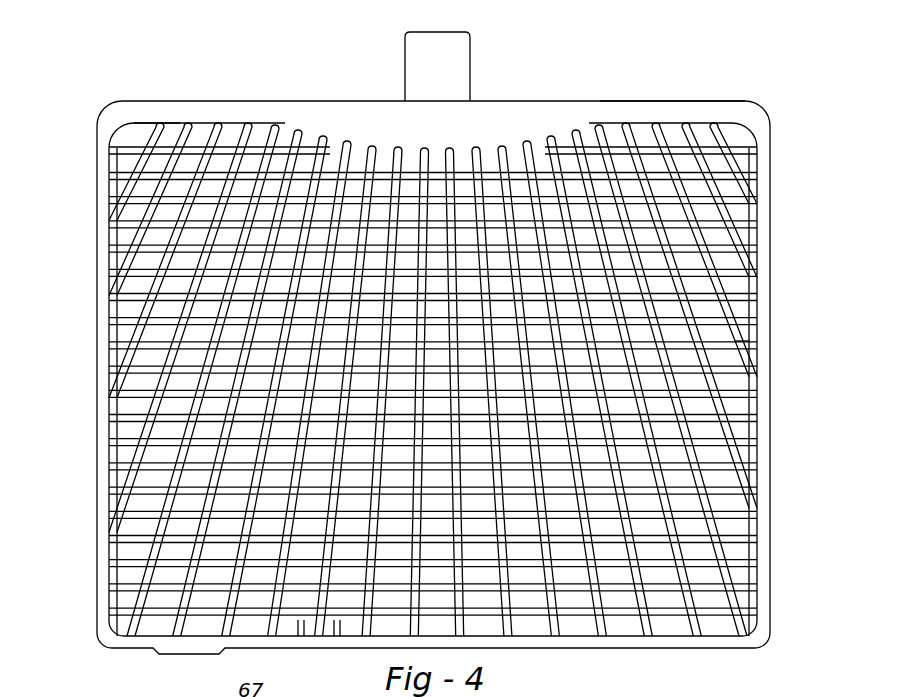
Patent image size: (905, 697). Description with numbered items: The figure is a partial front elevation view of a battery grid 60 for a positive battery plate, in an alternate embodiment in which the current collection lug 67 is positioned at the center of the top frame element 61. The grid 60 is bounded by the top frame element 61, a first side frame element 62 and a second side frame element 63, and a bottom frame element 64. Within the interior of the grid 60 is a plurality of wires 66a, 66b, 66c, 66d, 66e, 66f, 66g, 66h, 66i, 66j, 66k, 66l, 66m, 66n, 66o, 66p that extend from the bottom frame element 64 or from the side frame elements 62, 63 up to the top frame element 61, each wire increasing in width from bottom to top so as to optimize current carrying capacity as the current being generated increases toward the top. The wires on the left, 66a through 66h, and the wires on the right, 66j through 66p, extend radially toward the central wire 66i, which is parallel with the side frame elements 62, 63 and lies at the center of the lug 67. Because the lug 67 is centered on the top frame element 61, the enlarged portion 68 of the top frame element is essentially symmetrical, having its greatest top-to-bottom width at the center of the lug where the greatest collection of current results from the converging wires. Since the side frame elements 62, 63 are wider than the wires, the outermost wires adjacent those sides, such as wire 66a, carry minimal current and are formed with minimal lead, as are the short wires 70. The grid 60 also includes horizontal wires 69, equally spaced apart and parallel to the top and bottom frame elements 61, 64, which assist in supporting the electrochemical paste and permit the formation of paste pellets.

The grid 60 is at (552, 82).
The top frame element 61 is at (680, 101).
The first side frame element 62 is at (108, 292).
The second side frame element 63 is at (750, 310).
The bottom frame element 64 is at (625, 645).
The wire 66a is at (155, 191).
The wire 66b is at (150, 241).
The wire 66c is at (195, 334).
The wire 66d is at (210, 353).
The wire 66e is at (262, 403).
The wire 66f is at (290, 413).
The wire 66g is at (350, 481).
The wire 66h is at (330, 512).
The wire 66i is at (687, 524).
The wire 66j is at (560, 509).
The wire 66k is at (727, 459).
The wire 66l is at (560, 433).
The wire 66m is at (610, 411).
The wire 66n is at (640, 386).
The wire 66o is at (700, 286).
The wire 66p is at (730, 216).
The current collection lug 67 is at (410, 62).
The enlarged portion 68 is at (462, 130).
The wires 69 is at (735, 341).
The short wires 70 is at (146, 143).